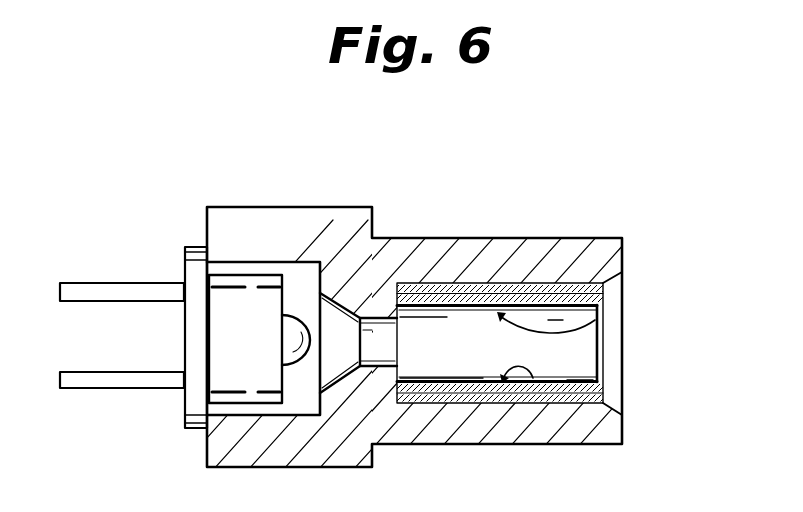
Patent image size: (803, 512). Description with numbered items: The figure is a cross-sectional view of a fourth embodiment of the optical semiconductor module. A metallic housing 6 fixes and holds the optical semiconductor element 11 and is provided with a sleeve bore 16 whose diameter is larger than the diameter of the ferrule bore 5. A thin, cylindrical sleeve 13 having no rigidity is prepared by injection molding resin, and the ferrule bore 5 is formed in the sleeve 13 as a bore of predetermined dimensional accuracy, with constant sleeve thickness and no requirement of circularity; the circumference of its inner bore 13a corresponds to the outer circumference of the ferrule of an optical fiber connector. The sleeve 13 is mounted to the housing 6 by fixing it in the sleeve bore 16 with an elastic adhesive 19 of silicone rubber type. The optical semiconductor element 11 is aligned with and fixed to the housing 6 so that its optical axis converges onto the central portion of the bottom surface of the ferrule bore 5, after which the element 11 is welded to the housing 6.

The housing 6 is at (443, 268).
The optical semiconductor element 11 is at (193, 382).
The sleeve 13 is at (597, 388).
The inner bore 13a is at (612, 288).
The ferrule bore 5 is at (556, 378).
The sleeve bore 16 is at (537, 402).
The elastic adhesive 19 is at (540, 288).